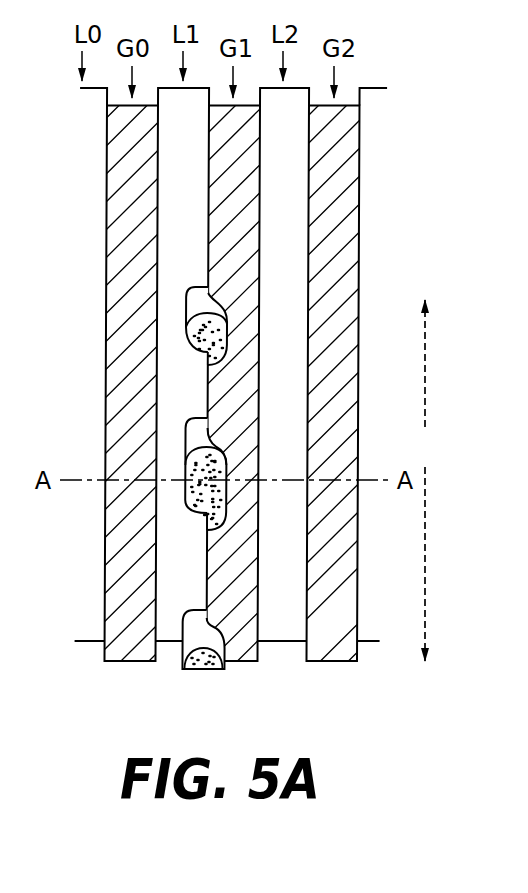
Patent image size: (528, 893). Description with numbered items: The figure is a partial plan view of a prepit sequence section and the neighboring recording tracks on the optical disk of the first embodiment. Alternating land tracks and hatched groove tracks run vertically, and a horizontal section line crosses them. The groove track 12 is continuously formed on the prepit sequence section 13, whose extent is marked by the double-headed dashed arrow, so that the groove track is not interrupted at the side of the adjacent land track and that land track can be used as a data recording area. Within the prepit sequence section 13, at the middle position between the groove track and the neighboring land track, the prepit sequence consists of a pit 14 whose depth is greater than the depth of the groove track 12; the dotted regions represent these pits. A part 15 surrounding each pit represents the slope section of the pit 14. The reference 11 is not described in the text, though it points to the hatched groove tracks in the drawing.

The gate line (hatched conductor) 11 is at (283, 168).
The groove track 12 is at (228, 258).
The prepit sequence section 13 is at (449, 480).
The pit 14 is at (187, 334).
The slope section 15 is at (195, 299).